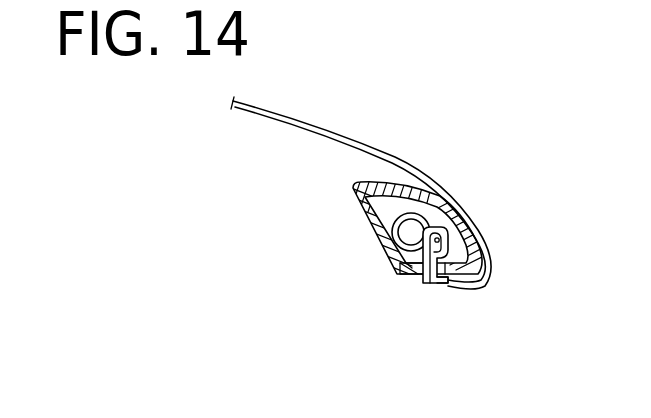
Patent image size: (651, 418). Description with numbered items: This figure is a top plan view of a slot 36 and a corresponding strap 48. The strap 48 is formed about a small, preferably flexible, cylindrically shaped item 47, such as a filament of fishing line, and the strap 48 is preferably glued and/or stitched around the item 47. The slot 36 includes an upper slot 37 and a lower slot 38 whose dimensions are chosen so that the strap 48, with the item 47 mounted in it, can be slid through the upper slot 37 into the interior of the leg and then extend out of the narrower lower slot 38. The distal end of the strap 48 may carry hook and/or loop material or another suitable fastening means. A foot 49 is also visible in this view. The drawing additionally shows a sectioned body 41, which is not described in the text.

The slot 36 is at (425, 322).
The upper slot 37 is at (433, 281).
The lower slot 38 is at (418, 278).
The seal body 41 is at (348, 195).
The cylindrically shaped item 47 is at (438, 237).
The strap 48 is at (345, 130).
The foot 49 is at (393, 258).